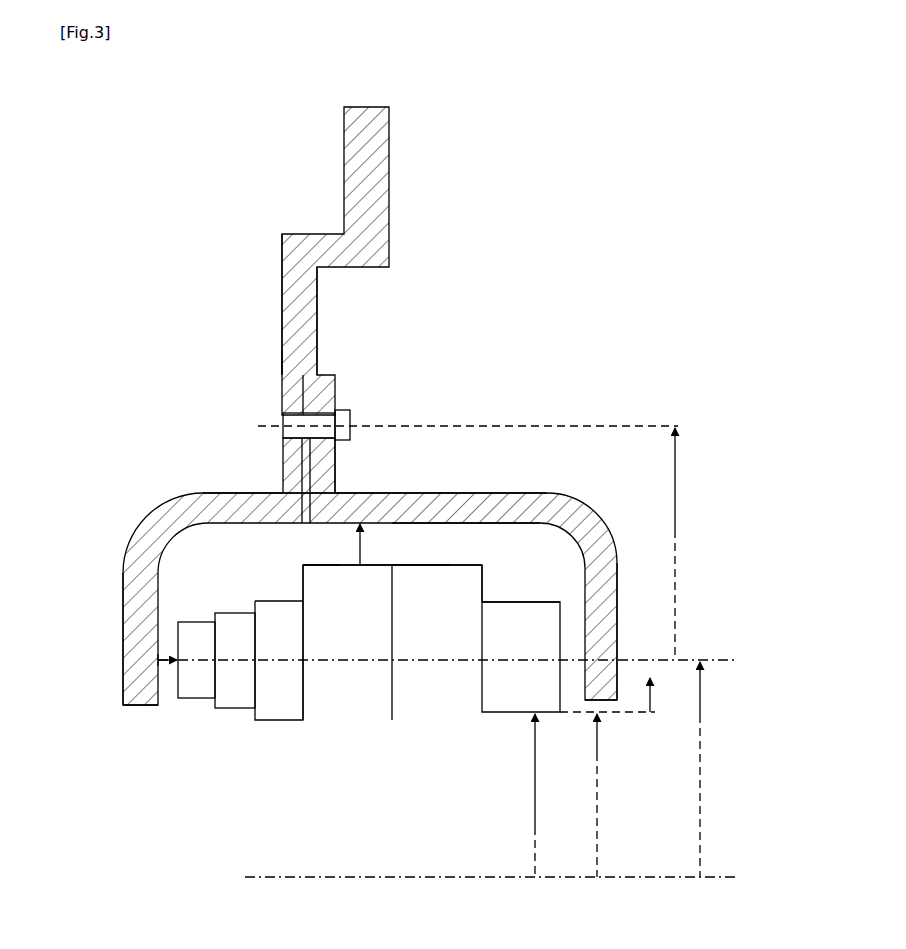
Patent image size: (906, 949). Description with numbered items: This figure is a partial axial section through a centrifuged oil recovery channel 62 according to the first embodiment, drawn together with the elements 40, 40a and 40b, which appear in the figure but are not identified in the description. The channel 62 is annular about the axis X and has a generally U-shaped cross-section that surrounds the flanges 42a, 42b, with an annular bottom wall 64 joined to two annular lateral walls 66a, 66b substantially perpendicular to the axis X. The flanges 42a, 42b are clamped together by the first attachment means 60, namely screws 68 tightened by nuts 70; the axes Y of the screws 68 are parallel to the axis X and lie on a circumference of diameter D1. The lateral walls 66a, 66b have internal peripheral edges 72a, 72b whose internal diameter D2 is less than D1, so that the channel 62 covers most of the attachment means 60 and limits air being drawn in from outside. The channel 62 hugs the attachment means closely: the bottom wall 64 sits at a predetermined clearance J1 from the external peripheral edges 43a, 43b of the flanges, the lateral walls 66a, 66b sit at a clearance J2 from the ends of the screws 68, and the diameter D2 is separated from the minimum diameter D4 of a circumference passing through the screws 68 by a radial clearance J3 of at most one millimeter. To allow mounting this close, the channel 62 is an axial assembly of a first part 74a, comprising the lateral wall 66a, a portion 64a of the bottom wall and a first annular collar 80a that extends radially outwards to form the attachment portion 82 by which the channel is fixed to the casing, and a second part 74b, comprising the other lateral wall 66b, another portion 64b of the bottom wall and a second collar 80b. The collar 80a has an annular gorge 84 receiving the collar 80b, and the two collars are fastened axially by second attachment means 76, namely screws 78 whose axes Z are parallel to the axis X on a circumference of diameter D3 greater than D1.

The shaft 40 is at (358, 762).
The first shaft portion 40a is at (345, 700).
The second shaft portion 40b is at (450, 700).
The flange 42a is at (302, 588).
The flange 42b is at (468, 575).
The external peripheral edge of flange 43a is at (322, 563).
The external peripheral edge of flange 43b is at (405, 560).
The first attachment means 60 is at (540, 697).
The centrifuged oil recovery channel 62 is at (490, 480).
The bottom wall 64 is at (394, 506).
The portion of the bottom wall 64a is at (233, 495).
The portion of the bottom wall 64b is at (427, 492).
The lateral wall 66a is at (133, 628).
The lateral wall 66b is at (612, 632).
The screws 68 is at (195, 690).
The nuts 70 is at (240, 700).
The internal peripheral edge 72a is at (140, 707).
The internal peripheral edge 72b is at (600, 703).
The first part of the channel 74a is at (320, 338).
The second part of the channel 74b is at (378, 486).
The second attachment means 76 is at (346, 408).
The screws 78 is at (283, 362).
The first annular attachment collar 80a is at (283, 290).
The second annular attachment collar 80b is at (315, 470).
The attachment portion 82 is at (380, 150).
The annular gorge 84 is at (287, 460).
The clearance J1 is at (373, 544).
The clearance J2 is at (163, 655).
The radial clearance J3 is at (618, 695).
The diameter D1 is at (703, 700).
The internal diameter D2 is at (600, 752).
The diameter D3 is at (676, 495).
The minimum diameter D4 is at (540, 800).
The axis X is at (715, 877).
The axes of the first attachment means Y is at (703, 658).
The axes of the second attachment screws Z is at (270, 425).